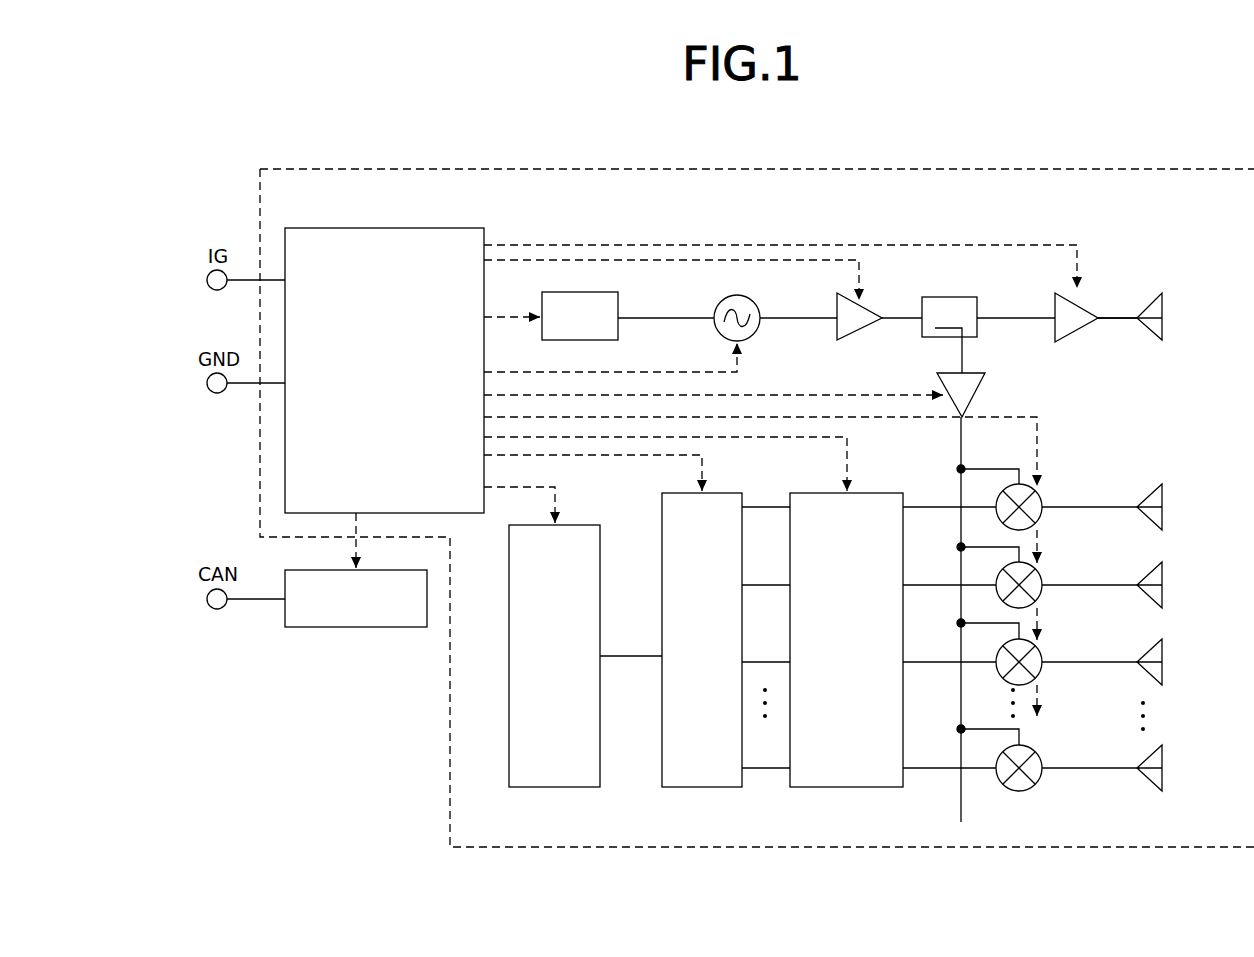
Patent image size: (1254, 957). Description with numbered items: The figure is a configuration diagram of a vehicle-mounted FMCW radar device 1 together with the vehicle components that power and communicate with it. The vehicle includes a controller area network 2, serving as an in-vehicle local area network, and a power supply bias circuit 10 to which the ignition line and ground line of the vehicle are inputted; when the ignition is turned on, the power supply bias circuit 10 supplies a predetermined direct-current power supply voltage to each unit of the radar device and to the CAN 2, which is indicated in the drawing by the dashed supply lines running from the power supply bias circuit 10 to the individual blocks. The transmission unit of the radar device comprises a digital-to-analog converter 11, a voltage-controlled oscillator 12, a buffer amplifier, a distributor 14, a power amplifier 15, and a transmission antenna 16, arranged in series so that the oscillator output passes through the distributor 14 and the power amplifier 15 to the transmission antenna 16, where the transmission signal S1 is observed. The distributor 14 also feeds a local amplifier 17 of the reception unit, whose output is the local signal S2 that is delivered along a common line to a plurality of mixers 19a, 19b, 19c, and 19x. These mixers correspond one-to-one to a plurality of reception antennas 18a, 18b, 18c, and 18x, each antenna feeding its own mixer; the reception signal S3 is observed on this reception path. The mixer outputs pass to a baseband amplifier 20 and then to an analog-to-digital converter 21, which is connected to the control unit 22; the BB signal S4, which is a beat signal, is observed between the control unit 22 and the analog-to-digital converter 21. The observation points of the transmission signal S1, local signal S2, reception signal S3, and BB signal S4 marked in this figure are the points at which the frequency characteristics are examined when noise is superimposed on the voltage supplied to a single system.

The FMCW radar device 1 is at (618, 169).
The controller area network (CAN) 2 is at (352, 627).
The power supply bias circuit 10 is at (452, 228).
The digital-to-analog converter (DAC) 11 is at (597, 292).
The voltage-controlled oscillator (VCO) 12 is at (755, 302).
The distributor 14 is at (953, 297).
The power amplifier (PA) 15 is at (1082, 305).
The transmission antenna 16 is at (1163, 302).
The local amplifier (LA) 17 is at (977, 393).
The reception antenna 18a is at (1163, 498).
The reception antenna 18b is at (1163, 576).
The reception antenna 18c is at (1163, 653).
The reception antenna 18x is at (1163, 759).
The mixer 19a is at (1038, 493).
The mixer 19b is at (1038, 571).
The mixer 19c is at (1038, 648).
The mixer 19x is at (1038, 754).
The baseband amplifier (BBAMP) 20 is at (872, 787).
The analog-to-digital converter (ADC) 21 is at (710, 787).
The control unit 22 is at (572, 787).
The transmission signal S1 is at (1173, 338).
The local signal S2 is at (948, 445).
The reception signal S3 is at (1087, 773).
The BB signal S4 is at (626, 664).